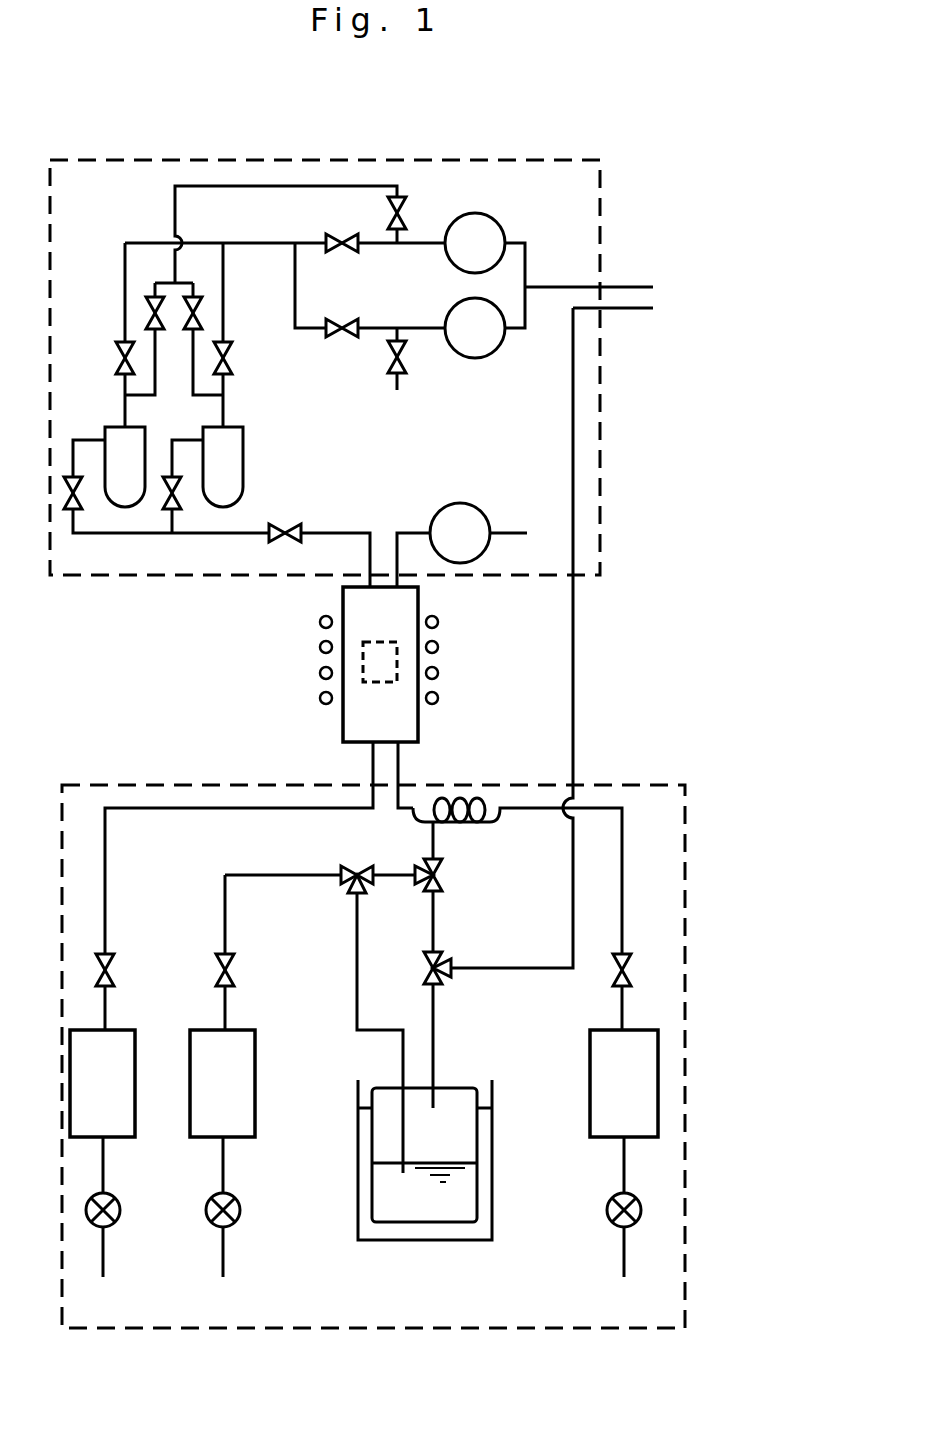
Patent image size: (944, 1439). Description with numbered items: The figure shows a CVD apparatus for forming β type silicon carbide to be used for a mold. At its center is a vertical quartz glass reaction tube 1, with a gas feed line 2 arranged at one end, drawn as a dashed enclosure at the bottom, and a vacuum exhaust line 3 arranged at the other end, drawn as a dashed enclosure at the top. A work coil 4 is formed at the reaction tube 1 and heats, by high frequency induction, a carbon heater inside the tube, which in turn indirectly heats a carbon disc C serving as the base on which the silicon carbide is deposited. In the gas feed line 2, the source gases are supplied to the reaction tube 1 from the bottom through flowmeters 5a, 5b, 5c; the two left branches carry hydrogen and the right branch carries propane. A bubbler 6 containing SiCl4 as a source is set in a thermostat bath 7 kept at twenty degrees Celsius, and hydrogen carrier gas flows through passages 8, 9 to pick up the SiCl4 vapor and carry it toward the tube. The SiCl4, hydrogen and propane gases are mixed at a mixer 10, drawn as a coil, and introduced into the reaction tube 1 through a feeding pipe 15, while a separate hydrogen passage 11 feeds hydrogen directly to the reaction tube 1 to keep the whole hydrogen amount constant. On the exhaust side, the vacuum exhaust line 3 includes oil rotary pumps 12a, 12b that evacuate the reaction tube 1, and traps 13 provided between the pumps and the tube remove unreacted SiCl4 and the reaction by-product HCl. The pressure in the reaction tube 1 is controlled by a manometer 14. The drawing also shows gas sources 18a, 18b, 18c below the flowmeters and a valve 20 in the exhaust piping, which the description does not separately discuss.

The quartz glass reaction tube 1 is at (420, 715).
The gas feed line 2 is at (685, 888).
The vacuum exhaust line 3 is at (600, 200).
The work coil 4 is at (440, 620).
The disc C is at (363, 662).
The flowmeter 5a is at (137, 1058).
The flowmeter 5b is at (268, 1060).
The flowmeter 5c is at (590, 1090).
The bubbler 6 is at (455, 1085).
The thermostat bath 7 is at (492, 1138).
The passage 8 is at (287, 870).
The passage 9 is at (355, 942).
The mixer 10 is at (487, 808).
The passage 11 is at (150, 812).
The oil rotary pump 12a is at (495, 216).
The oil rotary pump 12b is at (480, 358).
The trap 13 is at (105, 428).
The manometer 14 is at (480, 500).
The feeding pipe 15 is at (400, 765).
The hydrogen gas source 18a is at (118, 1198).
The hydrogen gas source 18b is at (238, 1198).
The propane gas source 18c is at (640, 1195).
The valve 20 is at (300, 525).